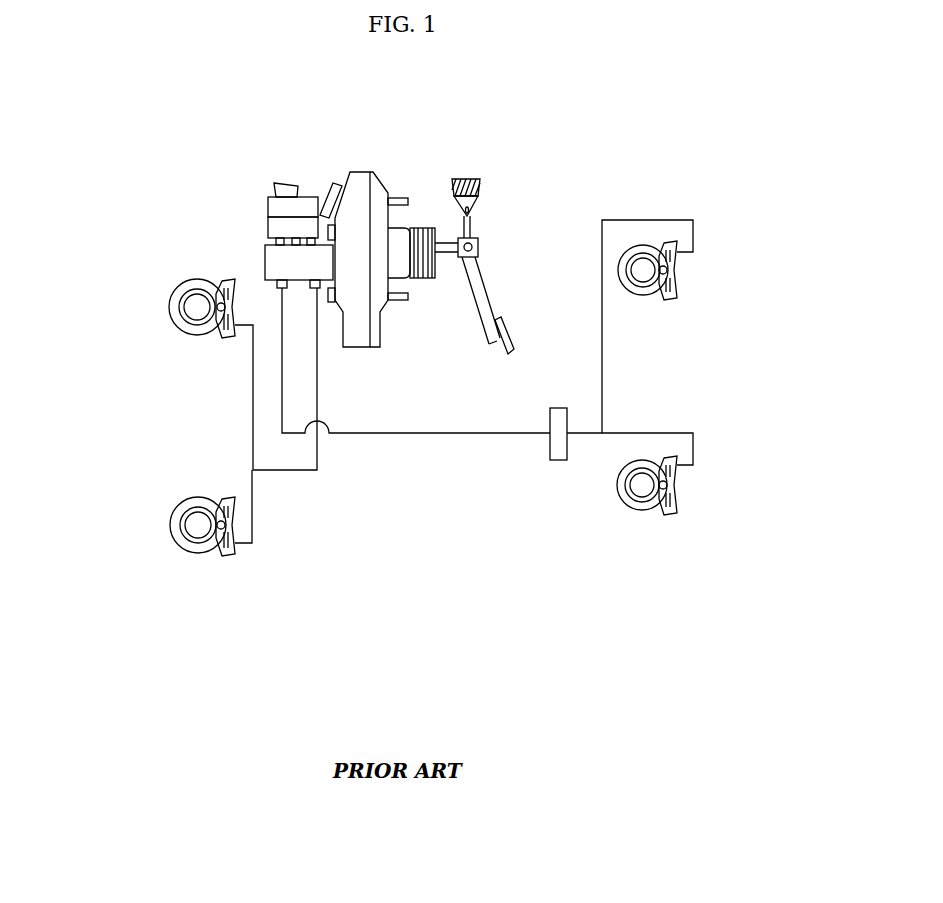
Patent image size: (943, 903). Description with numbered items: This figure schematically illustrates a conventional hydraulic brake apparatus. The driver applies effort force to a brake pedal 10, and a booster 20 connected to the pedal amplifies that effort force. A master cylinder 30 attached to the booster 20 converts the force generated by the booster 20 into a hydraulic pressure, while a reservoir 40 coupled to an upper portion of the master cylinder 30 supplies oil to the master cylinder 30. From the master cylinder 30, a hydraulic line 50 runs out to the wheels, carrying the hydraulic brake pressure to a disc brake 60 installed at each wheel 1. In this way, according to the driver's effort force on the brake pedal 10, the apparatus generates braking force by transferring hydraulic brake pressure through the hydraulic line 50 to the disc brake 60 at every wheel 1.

The wheel 1 is at (655, 513).
The brake pedal 10 is at (486, 301).
The booster 20 is at (382, 188).
The master cylinder 30 is at (282, 262).
The reservoir 40 is at (280, 208).
The hydraulic line 50 is at (282, 392).
The disc brake 60 is at (218, 340).